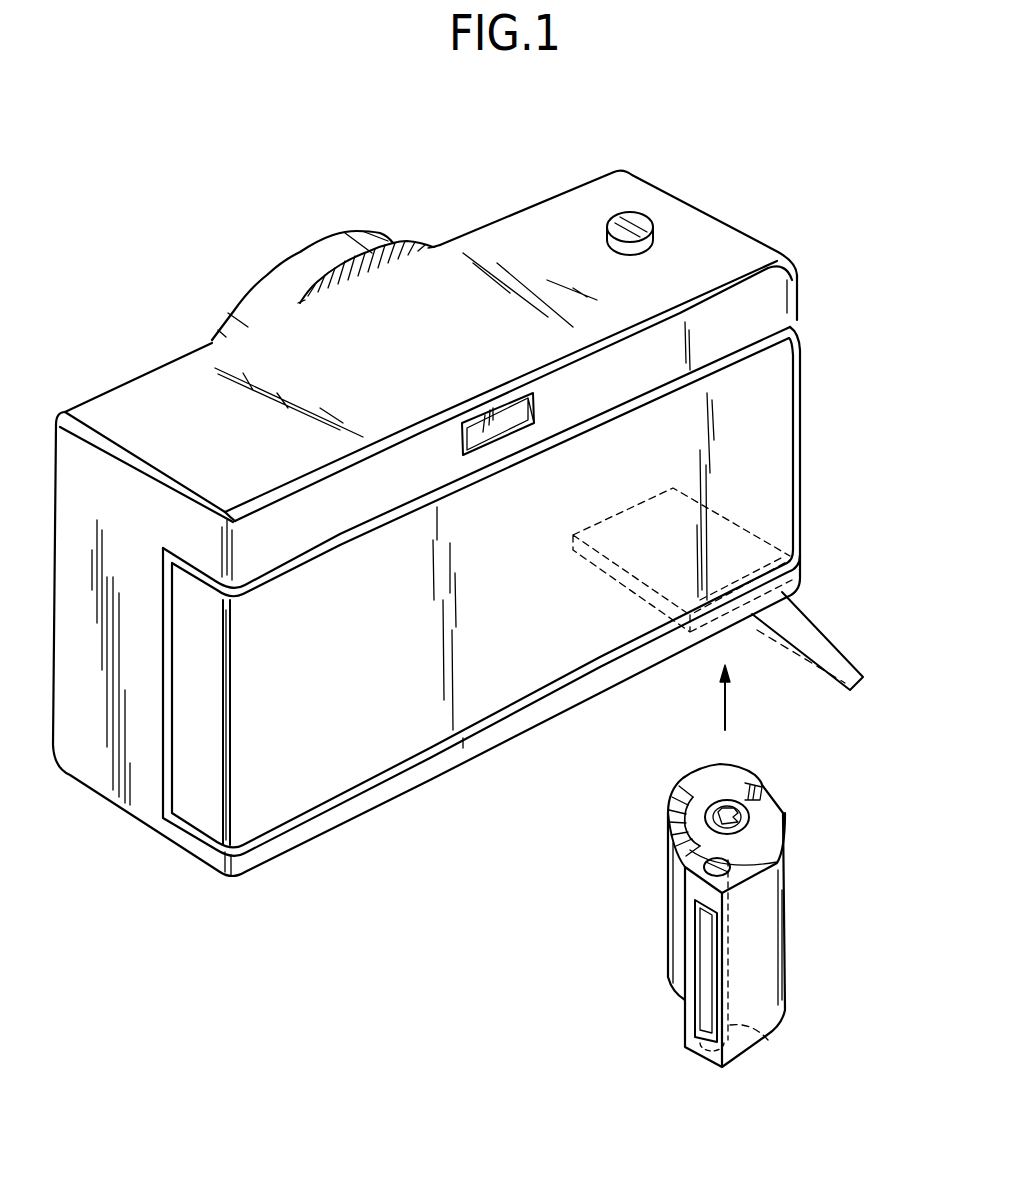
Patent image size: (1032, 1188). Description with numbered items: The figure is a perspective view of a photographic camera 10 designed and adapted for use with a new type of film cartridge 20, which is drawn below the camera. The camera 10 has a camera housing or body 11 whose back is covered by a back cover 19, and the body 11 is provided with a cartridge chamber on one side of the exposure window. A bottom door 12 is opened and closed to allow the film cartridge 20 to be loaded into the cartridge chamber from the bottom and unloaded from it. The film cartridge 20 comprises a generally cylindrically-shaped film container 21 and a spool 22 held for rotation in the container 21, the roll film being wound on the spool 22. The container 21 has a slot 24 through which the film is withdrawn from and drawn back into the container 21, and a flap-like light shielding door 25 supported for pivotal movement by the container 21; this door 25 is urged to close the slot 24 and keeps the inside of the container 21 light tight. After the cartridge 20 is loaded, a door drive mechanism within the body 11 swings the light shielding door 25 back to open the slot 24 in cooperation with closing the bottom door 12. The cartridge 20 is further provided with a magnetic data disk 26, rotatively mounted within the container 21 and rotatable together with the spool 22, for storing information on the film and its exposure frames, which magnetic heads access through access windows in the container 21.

The photographic camera 10 is at (460, 462).
The camera body 11 is at (762, 236).
The bottom door 12 is at (833, 647).
The back cover 19 is at (793, 408).
The film cartridge 20 is at (740, 899).
The film container 21 is at (778, 907).
The spool 22 is at (727, 817).
The slot 24 is at (712, 1017).
The light shielding door 25 is at (772, 1035).
The magnetic data disk 26 is at (687, 812).